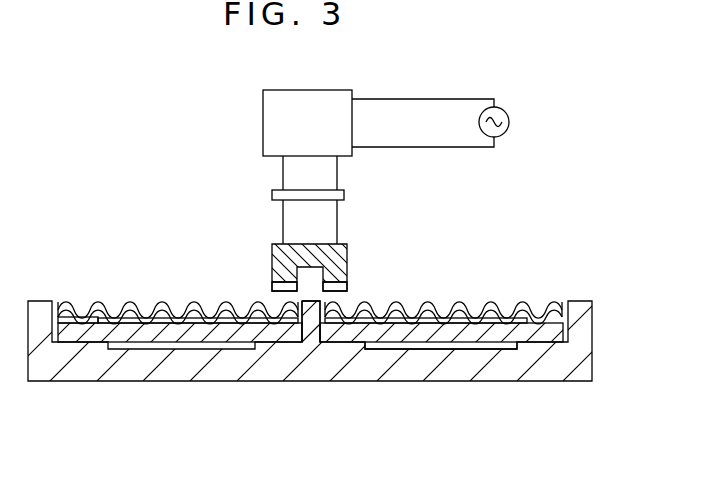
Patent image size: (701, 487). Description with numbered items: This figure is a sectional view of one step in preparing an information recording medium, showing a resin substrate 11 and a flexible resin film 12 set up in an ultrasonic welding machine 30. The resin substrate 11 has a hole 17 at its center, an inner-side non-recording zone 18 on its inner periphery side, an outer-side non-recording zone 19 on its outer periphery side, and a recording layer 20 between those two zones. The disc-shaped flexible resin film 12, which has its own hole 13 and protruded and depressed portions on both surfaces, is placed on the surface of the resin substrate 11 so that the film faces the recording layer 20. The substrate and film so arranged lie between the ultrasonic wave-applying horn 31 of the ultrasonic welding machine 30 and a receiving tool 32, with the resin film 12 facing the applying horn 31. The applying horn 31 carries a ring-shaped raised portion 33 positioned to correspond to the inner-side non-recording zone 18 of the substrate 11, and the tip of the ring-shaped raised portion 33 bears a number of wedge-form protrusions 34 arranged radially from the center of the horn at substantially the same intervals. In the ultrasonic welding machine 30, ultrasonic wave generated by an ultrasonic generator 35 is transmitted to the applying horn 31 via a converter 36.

The resin substrate 11 is at (349, 335).
The flexible resin film 12 is at (181, 305).
The hole 13 is at (382, 304).
The hole 17 is at (311, 345).
The inner-side non-recording zone 18 is at (270, 303).
The outer-side non-recording zone 19 is at (85, 320).
The recording layer 20 is at (412, 322).
The ultrasonic welding machine 30 is at (257, 226).
The ultrasonic wave-applying horn 31 is at (338, 244).
The receiving tool 32 is at (176, 370).
The ring-shaped raised portion 33 is at (333, 276).
The protrusions 34 is at (338, 297).
The ultrasonic generator 35 is at (503, 112).
The converter 36 is at (320, 100).